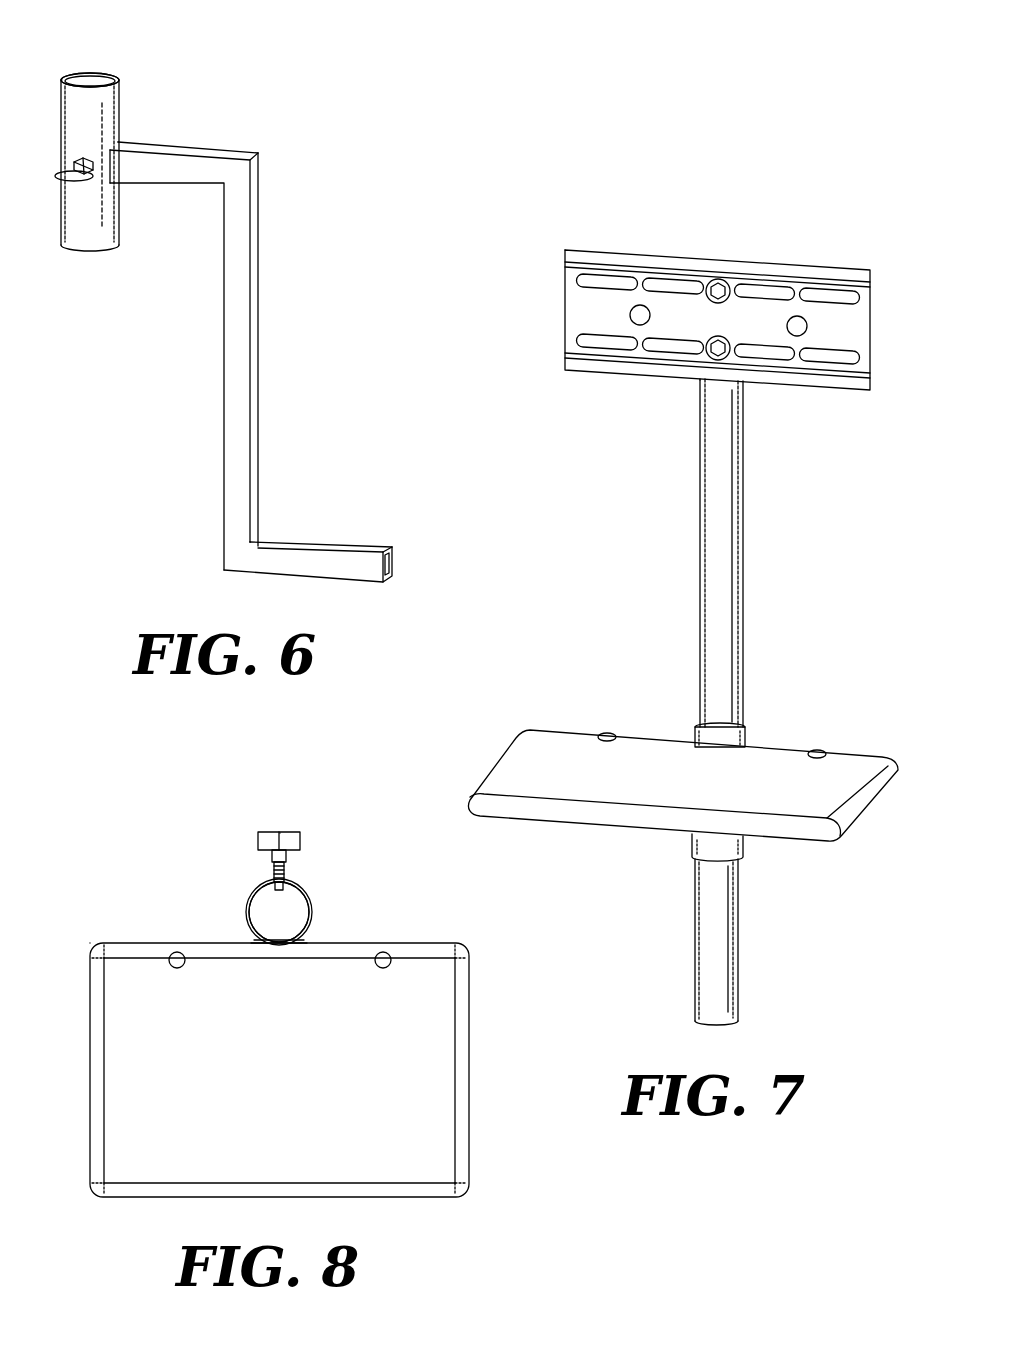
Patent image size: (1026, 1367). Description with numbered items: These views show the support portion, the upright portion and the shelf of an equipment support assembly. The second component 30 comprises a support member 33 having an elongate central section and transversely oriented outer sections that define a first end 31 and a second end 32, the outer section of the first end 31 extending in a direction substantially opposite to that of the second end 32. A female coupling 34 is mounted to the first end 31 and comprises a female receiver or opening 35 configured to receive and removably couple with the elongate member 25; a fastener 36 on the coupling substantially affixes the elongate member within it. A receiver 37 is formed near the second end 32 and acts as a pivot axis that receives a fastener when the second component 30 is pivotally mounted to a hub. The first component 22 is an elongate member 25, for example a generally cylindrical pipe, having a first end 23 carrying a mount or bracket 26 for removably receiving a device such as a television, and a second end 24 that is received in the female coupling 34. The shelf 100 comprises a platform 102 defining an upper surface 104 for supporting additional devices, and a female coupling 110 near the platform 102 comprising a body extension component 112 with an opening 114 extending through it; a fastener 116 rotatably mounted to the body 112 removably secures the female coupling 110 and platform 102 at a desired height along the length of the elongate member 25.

In FIG. 7, the first component 22 is at (874, 517).
In FIG. 7, the first end 23 is at (762, 230).
In FIG. 7, the second end 24 is at (770, 1006).
In FIG. 7, the elongate member 25 is at (727, 568).
In FIG. 7, the bracket 26 is at (847, 330).
In FIG. 6, the second component 30 is at (376, 207).
In FIG. 6, the first end 31 is at (184, 67).
In FIG. 6, the second end 32 is at (411, 592).
In FIG. 6, the support member 33 is at (236, 347).
In FIG. 6, the female coupling 34 is at (80, 128).
In FIG. 6, the female receiver or opening 35 is at (90, 73).
In FIG. 6, the set screw 36 is at (80, 180).
In FIG. 6, the receiver 37 is at (370, 545).
In FIG. 7, the shelf 100 is at (882, 718).
In FIG. 8, the shelf 100 is at (68, 908).
In FIG. 8, the platform 102 is at (471, 1022).
In FIG. 8, the upper surface 104 is at (293, 1079).
In FIG. 8, the female coupling 110 is at (328, 908).
In FIG. 8, the body extension component 112 is at (304, 884).
In FIG. 8, the opening 114 is at (286, 918).
In FIG. 8, the fastener 116 is at (288, 836).